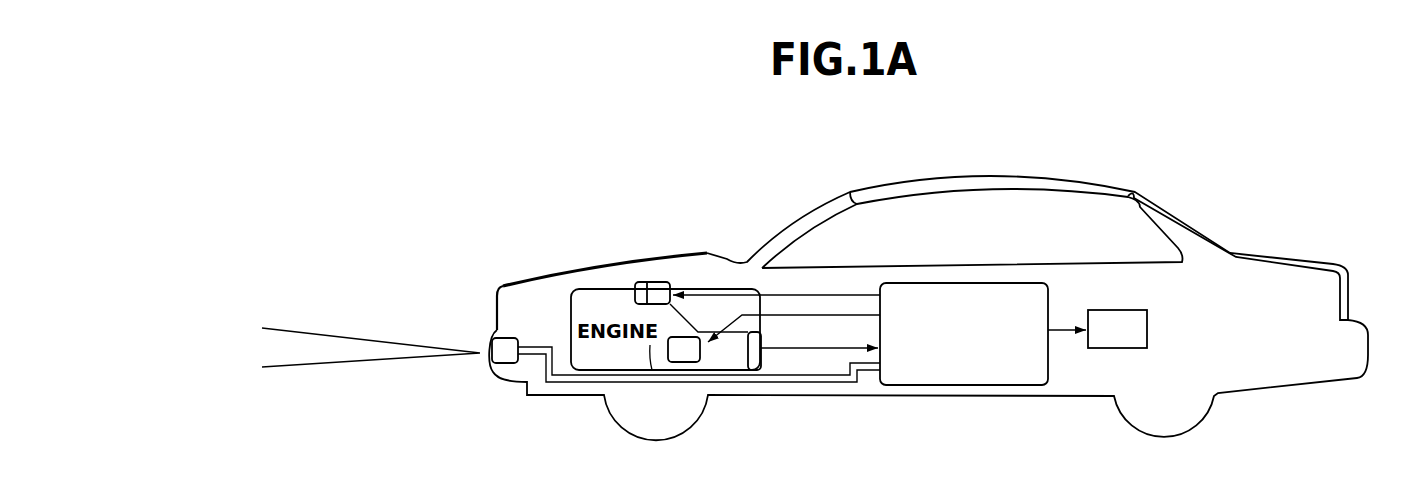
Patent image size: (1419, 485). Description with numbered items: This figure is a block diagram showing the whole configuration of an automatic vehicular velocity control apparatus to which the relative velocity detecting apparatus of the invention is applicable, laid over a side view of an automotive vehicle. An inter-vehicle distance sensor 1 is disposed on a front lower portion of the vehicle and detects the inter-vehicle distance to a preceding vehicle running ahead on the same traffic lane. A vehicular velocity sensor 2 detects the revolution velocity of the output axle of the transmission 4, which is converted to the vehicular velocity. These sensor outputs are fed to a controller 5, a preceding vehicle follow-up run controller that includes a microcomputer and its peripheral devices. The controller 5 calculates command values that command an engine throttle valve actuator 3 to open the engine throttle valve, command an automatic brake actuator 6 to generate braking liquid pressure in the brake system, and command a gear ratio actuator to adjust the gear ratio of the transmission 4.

The inter-vehicle distance sensor 1 is at (491, 331).
The vehicular velocity sensor 2 is at (764, 356).
The engine throttle valve actuator 3 is at (655, 286).
The transmission 4 is at (711, 365).
The controller 5 is at (983, 387).
The automatic brake actuator 6 is at (1111, 351).